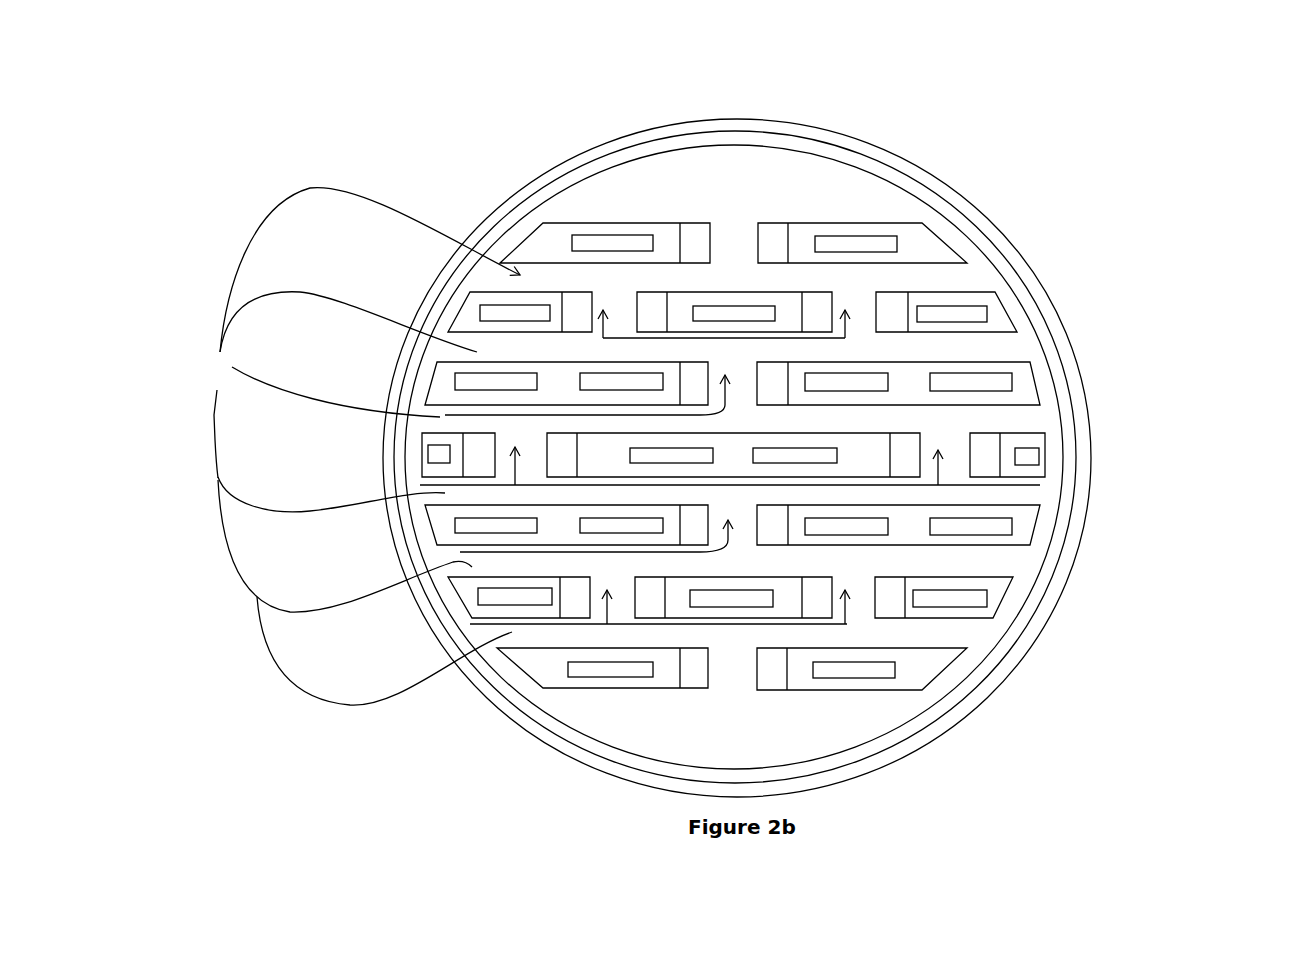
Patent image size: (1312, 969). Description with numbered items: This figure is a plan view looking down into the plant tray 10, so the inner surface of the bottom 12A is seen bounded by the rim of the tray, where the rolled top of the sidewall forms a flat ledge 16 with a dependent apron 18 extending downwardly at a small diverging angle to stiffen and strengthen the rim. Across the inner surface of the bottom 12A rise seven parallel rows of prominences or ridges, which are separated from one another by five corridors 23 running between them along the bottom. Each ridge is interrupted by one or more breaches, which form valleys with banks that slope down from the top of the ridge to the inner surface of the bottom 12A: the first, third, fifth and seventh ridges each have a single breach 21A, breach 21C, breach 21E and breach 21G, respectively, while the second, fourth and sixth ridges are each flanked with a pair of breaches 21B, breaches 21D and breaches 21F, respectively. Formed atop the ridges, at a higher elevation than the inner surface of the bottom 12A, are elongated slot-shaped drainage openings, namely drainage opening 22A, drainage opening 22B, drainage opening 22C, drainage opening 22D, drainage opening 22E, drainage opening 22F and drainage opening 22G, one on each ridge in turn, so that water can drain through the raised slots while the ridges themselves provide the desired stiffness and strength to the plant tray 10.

The plant tray 10 is at (353, 152).
The inner surface of the bottom 12A is at (605, 200).
The flat ledge 16 is at (970, 230).
The dependent apron 18 is at (920, 160).
The breach 21A is at (735, 232).
The breaches 21B is at (477, 352).
The breach 21C is at (440, 417).
The breaches 21D is at (445, 493).
The breach 21E is at (472, 567).
The breaches 21F is at (512, 632).
The breach 21G is at (733, 660).
The drainage opening 22A is at (613, 244).
The drainage opening 22B is at (533, 318).
The drainage opening 22C is at (490, 353).
The drainage opening 22D is at (437, 458).
The drainage opening 22E is at (497, 530).
The drainage opening 22F is at (515, 603).
The drainage opening 22G is at (618, 675).
The corridors 23 is at (332, 447).